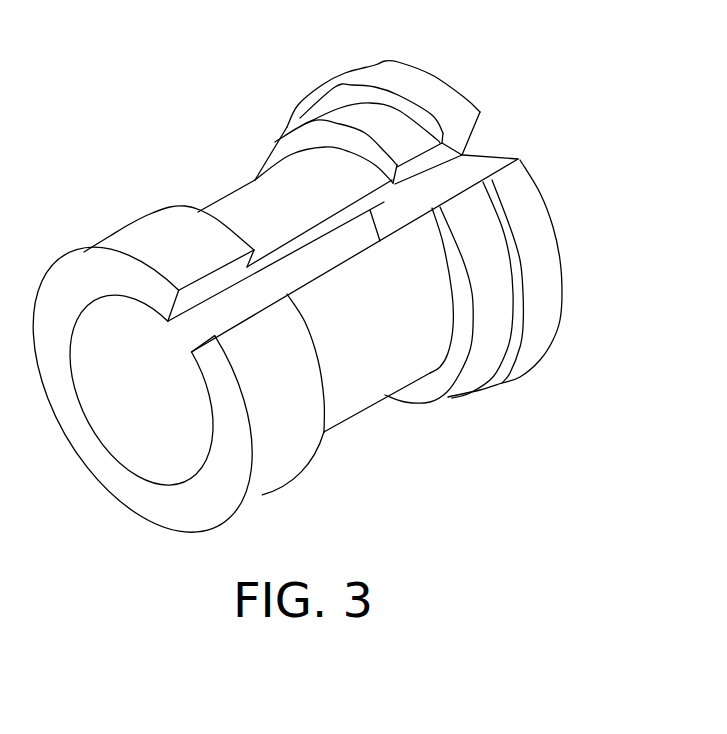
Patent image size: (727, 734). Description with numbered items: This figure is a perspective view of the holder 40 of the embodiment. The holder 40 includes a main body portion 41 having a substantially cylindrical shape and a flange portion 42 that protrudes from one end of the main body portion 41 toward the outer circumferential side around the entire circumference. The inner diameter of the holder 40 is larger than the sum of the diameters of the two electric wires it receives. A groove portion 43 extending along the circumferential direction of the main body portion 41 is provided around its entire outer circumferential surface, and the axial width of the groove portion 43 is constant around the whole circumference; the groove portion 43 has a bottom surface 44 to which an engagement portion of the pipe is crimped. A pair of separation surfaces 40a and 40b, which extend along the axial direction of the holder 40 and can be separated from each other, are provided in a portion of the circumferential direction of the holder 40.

The holder 40 is at (564, 104).
The separation surface 40a is at (477, 130).
The separation surface 40b is at (509, 161).
The main body portion 41 is at (337, 115).
The flange portion 42 is at (403, 80).
The groove portion 43 is at (257, 258).
The bottom surface 44 is at (270, 183).